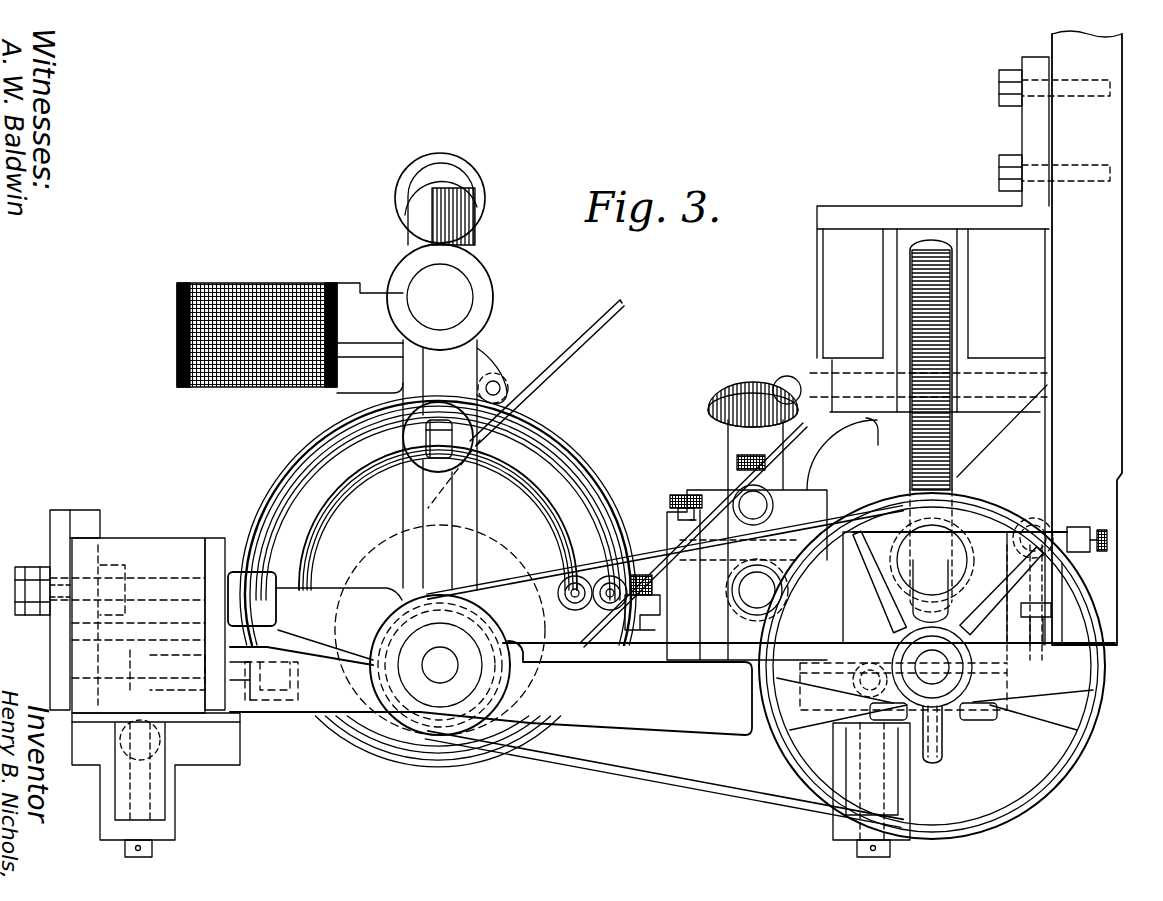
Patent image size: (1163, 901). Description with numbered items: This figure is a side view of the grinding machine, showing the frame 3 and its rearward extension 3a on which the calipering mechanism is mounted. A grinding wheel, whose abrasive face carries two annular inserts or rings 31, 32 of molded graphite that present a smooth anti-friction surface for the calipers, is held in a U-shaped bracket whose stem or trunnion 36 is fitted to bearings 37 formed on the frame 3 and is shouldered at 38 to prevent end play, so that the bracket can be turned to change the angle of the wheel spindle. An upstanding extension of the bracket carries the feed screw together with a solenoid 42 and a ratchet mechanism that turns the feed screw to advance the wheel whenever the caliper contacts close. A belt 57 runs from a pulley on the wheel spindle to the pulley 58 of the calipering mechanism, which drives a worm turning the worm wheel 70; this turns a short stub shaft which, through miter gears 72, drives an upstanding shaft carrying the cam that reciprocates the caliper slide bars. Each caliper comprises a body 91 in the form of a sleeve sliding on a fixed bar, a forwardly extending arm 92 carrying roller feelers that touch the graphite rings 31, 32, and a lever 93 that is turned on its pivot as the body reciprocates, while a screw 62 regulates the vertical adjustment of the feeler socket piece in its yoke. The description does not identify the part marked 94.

The frame 3 is at (622, 656).
The rearward extension of the frame 3a is at (1109, 573).
The anti-friction ring insert 31 is at (550, 502).
The anti-friction ring insert 32 is at (548, 457).
The trunnion 36 is at (486, 653).
The bearings 37 is at (144, 544).
The shoulder 38 is at (58, 553).
The solenoid 42 is at (262, 272).
The belt 57 is at (723, 788).
The pulley 58 is at (1048, 783).
The adjusting screw 62 is at (677, 494).
The worm wheel 70 is at (933, 246).
The miter gears 72 is at (772, 390).
The caliper lever body 91 is at (720, 592).
The forwardly extending arm 92 is at (634, 600).
The caliper lever 93 is at (985, 538).
The pulley 94 is at (770, 603).